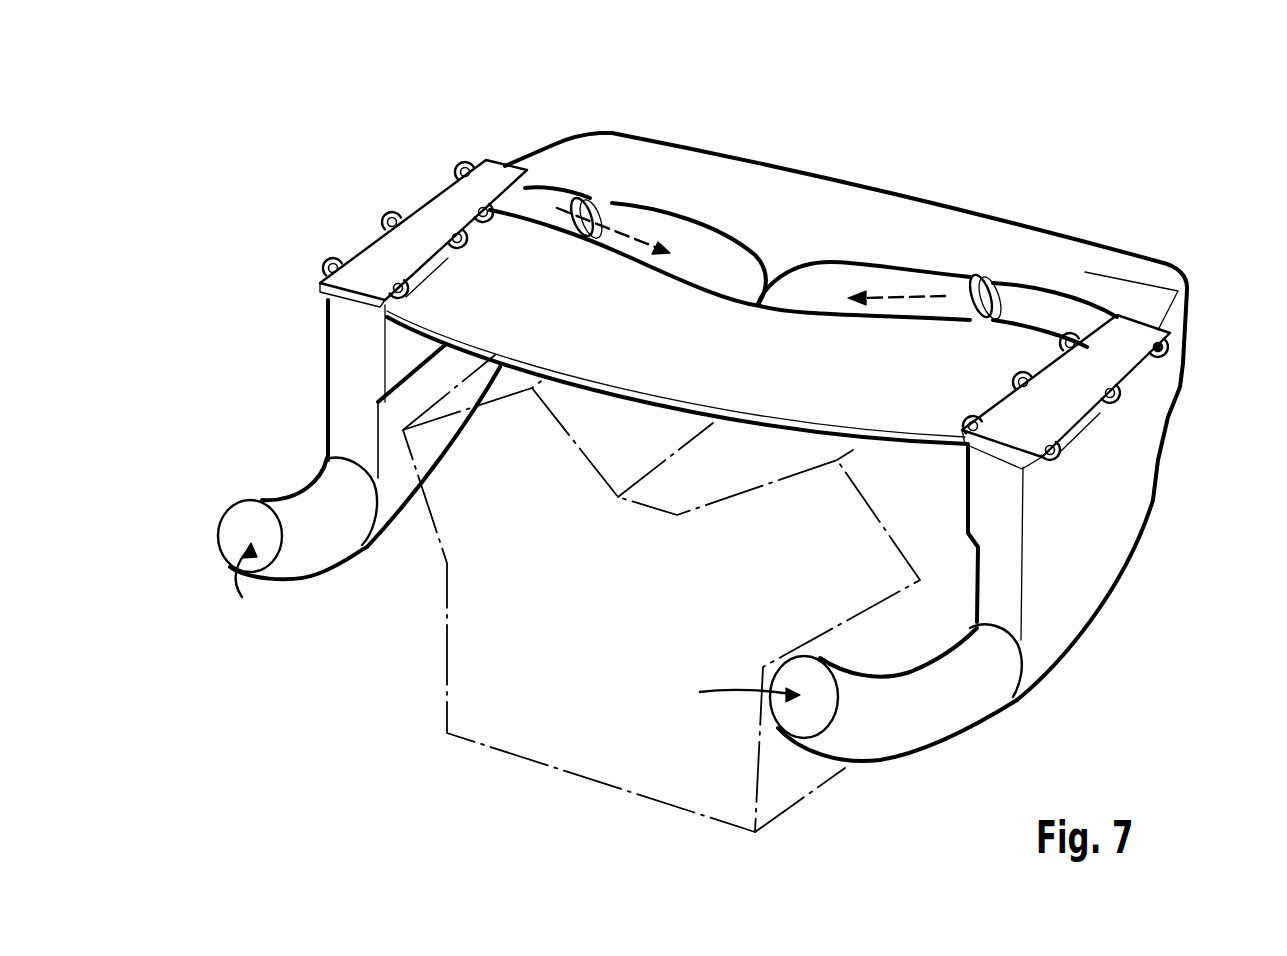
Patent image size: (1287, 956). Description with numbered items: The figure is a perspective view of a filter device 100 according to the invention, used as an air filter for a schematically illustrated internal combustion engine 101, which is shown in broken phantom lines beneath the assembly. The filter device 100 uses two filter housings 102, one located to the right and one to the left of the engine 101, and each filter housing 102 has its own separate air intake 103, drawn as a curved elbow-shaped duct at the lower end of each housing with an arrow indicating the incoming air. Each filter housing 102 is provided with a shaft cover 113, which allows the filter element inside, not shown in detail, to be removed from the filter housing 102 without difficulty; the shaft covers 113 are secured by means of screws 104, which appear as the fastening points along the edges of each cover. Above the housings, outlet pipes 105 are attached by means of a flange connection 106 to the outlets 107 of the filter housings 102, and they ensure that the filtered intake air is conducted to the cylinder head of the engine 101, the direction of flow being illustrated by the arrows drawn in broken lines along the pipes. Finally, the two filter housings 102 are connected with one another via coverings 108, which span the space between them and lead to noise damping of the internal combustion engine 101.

The filter device 100 is at (926, 136).
The internal combustion engine 101 is at (447, 653).
The filter housing 102 is at (340, 384).
The air intake 103 is at (307, 570).
The screw 104 is at (389, 216).
The outlet pipe 105 is at (817, 275).
The flange connection 106 is at (607, 195).
The outlet 107 is at (560, 193).
The covering 108 is at (822, 187).
The shaft cover 113 is at (373, 253).